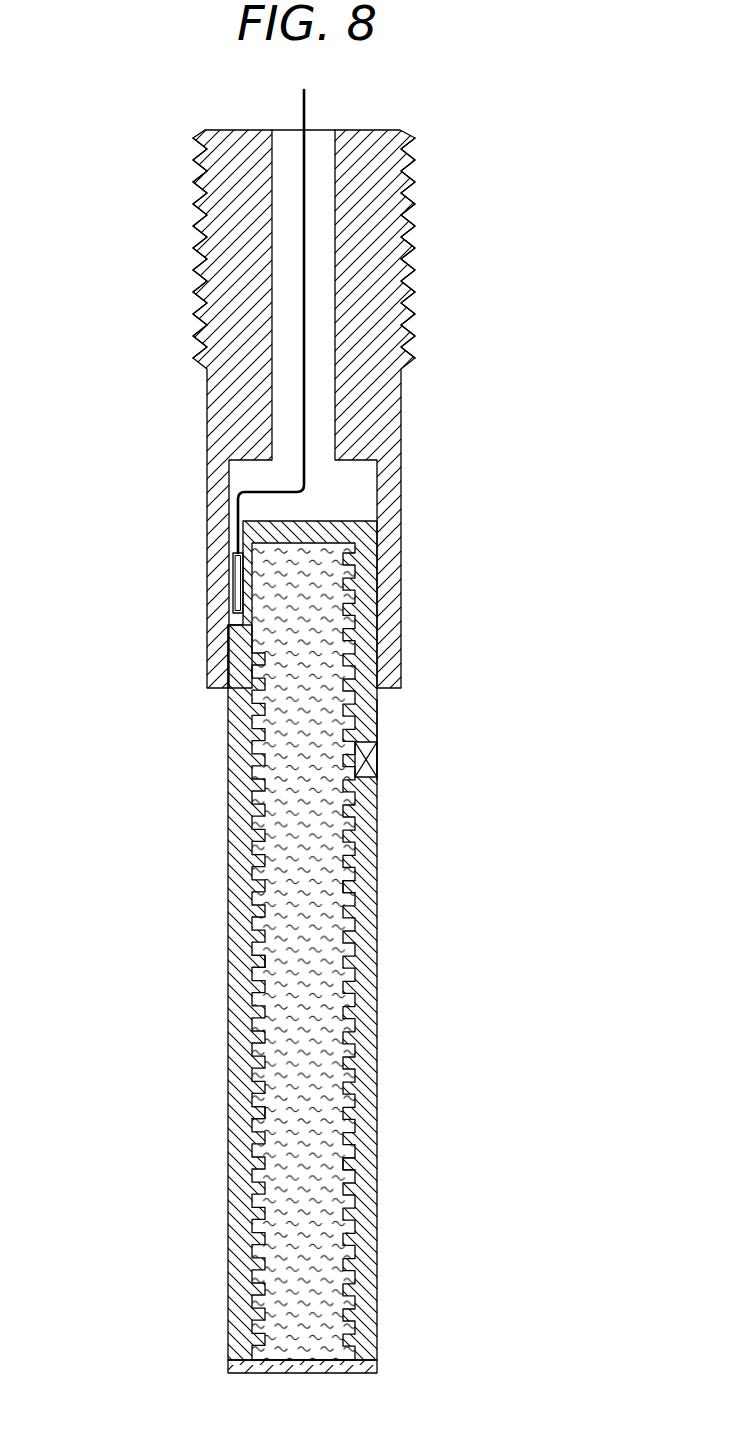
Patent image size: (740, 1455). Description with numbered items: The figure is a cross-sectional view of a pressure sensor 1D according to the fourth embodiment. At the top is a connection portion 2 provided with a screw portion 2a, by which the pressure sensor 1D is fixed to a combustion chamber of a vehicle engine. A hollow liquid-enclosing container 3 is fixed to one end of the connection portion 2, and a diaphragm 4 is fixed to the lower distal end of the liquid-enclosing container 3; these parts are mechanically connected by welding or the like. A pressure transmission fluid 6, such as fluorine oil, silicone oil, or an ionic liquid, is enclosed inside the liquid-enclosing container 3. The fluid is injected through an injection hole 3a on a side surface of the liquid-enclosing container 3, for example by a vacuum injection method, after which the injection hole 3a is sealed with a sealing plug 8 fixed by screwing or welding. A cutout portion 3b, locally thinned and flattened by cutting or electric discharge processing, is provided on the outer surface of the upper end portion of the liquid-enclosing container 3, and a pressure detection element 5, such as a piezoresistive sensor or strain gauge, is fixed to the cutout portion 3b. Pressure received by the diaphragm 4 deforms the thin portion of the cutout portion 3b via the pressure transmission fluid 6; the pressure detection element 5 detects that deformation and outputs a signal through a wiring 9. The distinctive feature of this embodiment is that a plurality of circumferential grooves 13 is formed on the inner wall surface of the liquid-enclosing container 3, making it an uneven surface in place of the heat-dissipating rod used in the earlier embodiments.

The pressure sensor 1D is at (512, 142).
The connection portion 2 is at (399, 407).
The screw portion 2a is at (195, 232).
The wiring 9 is at (300, 410).
The pressure detection element 5 is at (233, 572).
The liquid-enclosing container 3 is at (228, 870).
The injection hole 3a is at (378, 737).
The cutout portion 3b is at (243, 622).
The sealing plug 8 is at (378, 760).
The circumferential grooves 13 is at (355, 898).
The pressure transmission fluid 6 is at (318, 1010).
The diaphragm 4 is at (378, 1362).